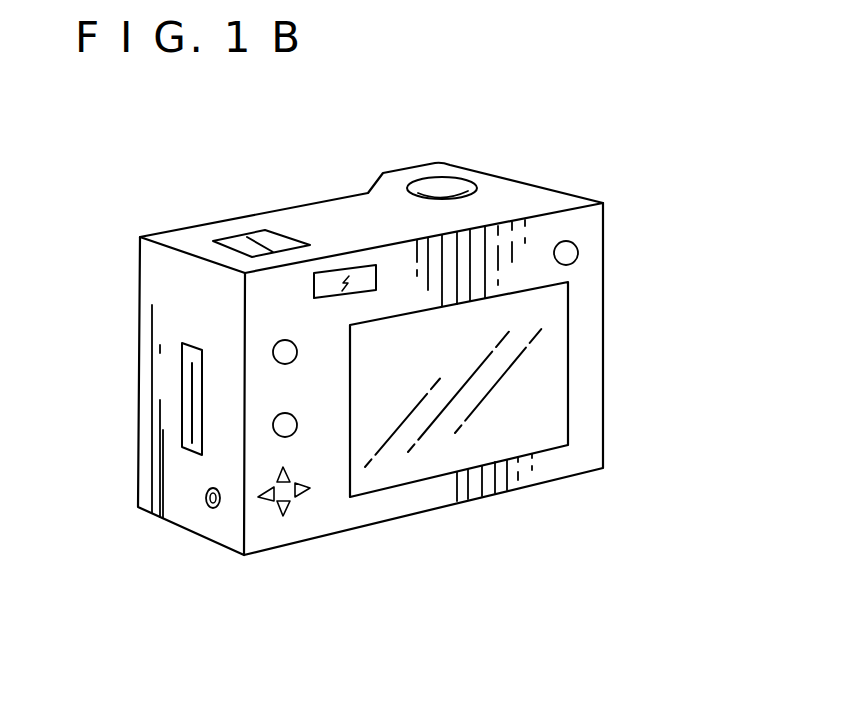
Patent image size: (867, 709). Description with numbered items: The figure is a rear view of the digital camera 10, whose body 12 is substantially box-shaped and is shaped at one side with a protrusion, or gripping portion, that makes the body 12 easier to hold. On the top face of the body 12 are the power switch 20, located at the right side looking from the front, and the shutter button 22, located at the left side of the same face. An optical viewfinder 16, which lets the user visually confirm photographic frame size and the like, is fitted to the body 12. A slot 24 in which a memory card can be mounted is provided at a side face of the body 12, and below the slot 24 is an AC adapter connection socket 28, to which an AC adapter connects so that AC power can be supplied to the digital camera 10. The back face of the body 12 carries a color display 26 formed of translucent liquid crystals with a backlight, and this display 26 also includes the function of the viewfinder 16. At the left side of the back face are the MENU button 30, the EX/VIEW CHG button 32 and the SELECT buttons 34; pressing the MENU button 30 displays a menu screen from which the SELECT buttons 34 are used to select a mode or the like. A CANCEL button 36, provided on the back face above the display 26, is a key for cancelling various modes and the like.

The digital camera 10 is at (370, 299).
The body 12 is at (353, 220).
The optical viewfinder 16 is at (330, 280).
The power switch 20 is at (240, 240).
The shutter button 22 is at (450, 183).
The slot 24 is at (192, 362).
The color display 26 is at (553, 407).
The AC adapter connection socket 28 is at (207, 500).
The MENU button 30 is at (272, 355).
The EX/VIEW CHG button 32 is at (273, 430).
The SELECT buttons 34 is at (295, 505).
The CANCEL button 36 is at (579, 253).